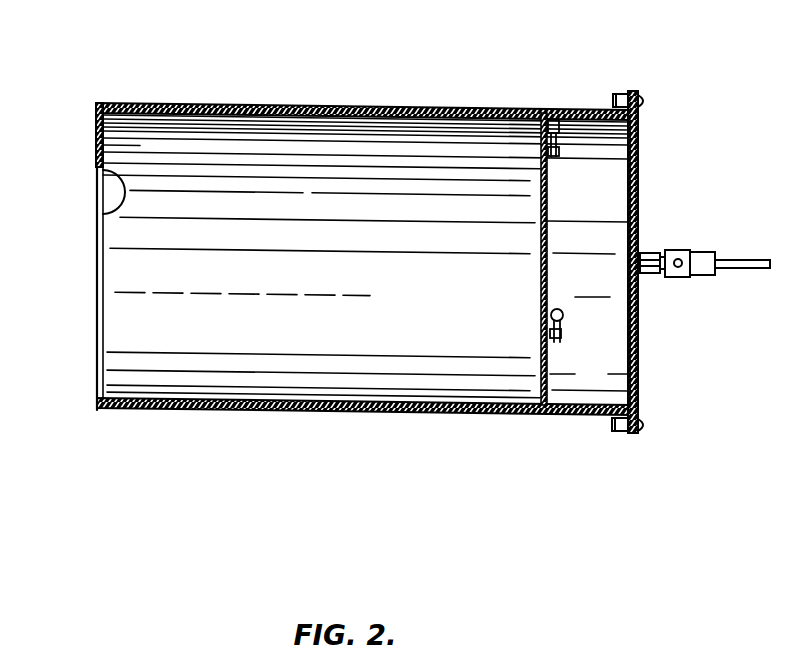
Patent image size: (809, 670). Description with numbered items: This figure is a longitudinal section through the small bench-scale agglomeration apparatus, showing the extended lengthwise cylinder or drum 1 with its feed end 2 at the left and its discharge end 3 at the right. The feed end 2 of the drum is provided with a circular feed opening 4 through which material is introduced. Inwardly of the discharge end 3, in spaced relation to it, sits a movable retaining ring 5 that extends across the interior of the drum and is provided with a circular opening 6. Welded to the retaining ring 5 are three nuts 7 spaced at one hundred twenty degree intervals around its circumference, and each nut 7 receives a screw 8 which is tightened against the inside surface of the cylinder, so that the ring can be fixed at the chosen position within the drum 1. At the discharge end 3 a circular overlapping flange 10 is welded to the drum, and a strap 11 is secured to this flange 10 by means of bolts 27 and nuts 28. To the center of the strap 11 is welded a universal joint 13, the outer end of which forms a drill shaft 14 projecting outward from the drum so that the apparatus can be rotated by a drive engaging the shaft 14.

The cylinder or drum 1 is at (273, 180).
The feed end 2 is at (97, 128).
The discharge end 3 is at (605, 157).
The circular feed opening 4 is at (110, 208).
The movable retaining ring 5 is at (587, 307).
The circular opening 6 is at (540, 347).
The nuts 7 is at (560, 125).
The screws 8 is at (556, 156).
The circular overlapping flange 10 is at (628, 91).
The strap 11 is at (637, 389).
The universal joint 13 is at (695, 250).
The drill shaft 14 is at (748, 268).
The bolts 27 is at (645, 98).
The nuts 28 is at (615, 93).